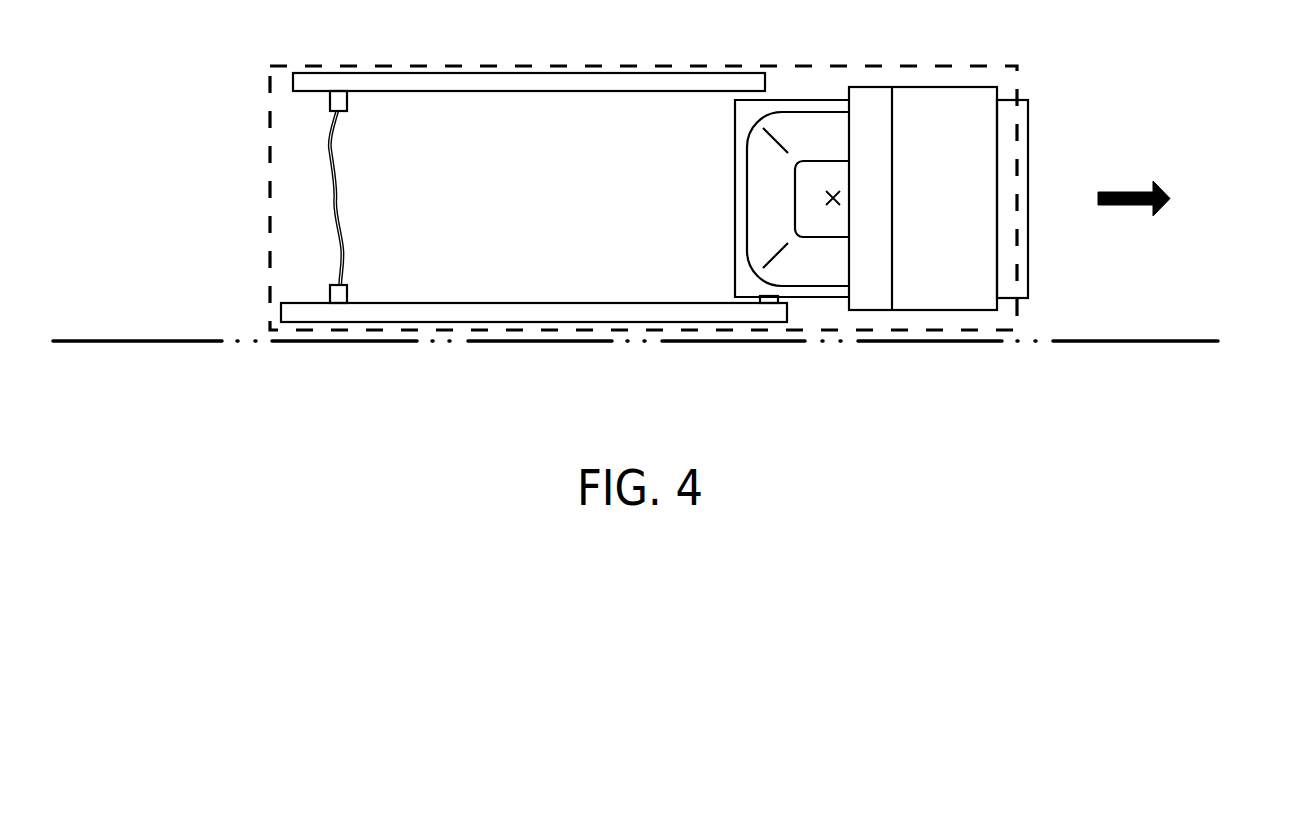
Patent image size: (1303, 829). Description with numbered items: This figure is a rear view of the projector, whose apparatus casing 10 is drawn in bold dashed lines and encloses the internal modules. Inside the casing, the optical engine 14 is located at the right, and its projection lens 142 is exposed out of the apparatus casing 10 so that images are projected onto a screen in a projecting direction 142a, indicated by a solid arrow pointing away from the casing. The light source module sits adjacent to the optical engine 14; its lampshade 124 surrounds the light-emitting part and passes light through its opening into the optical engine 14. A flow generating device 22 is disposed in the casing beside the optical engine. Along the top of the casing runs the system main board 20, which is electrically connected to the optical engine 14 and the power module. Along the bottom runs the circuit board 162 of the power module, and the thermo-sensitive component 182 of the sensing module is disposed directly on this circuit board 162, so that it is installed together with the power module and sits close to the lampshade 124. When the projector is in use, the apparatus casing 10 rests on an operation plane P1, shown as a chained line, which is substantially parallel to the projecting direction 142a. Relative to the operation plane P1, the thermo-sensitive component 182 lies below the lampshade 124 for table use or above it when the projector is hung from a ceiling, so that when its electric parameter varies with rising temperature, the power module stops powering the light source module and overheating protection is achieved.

The apparatus casing 10 is at (983, 67).
The optical engine 14 is at (784, 99).
The projection lens 142 is at (1023, 125).
The projecting direction 142a is at (1127, 205).
The system main board 20 is at (538, 83).
The circuit board 162 is at (457, 313).
The thermo-sensitive component 182 is at (773, 297).
The lampshade 124 is at (826, 277).
The flow generating device 22 is at (929, 297).
The operation plane P1 is at (1193, 340).